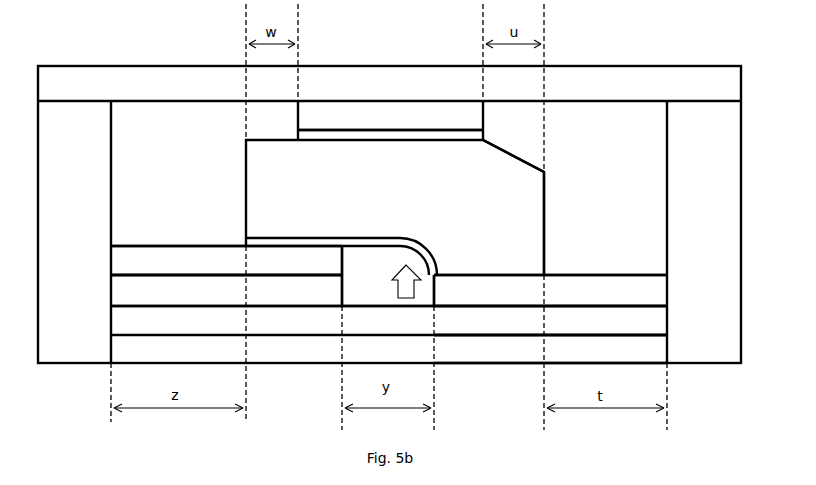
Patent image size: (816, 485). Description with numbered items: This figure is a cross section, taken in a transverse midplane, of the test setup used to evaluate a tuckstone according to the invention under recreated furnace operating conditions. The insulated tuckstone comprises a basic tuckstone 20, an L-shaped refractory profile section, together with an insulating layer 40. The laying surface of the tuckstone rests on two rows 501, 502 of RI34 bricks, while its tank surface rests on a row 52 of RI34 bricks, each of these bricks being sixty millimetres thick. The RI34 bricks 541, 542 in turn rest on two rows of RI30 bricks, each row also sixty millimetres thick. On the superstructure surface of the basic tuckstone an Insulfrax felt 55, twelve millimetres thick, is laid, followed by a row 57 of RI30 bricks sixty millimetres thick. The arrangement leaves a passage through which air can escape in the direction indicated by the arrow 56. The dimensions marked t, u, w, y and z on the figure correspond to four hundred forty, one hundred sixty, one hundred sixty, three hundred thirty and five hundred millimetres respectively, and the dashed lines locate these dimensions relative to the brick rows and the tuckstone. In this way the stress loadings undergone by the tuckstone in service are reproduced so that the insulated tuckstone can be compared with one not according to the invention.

The row of RI30 bricks 57 is at (321, 115).
The Insulfrax felt 55 is at (380, 130).
The insulating layer 40 is at (306, 240).
The first row of RI34 bricks 501 is at (145, 262).
The second row of RI34 bricks 502 is at (183, 297).
The basic tuckstone 20 is at (525, 197).
The row of RI34 bricks 52 is at (605, 293).
The arrow 56 is at (418, 284).
The RI34 bricks 542 is at (527, 357).
The RI34 bricks 541 is at (570, 327).